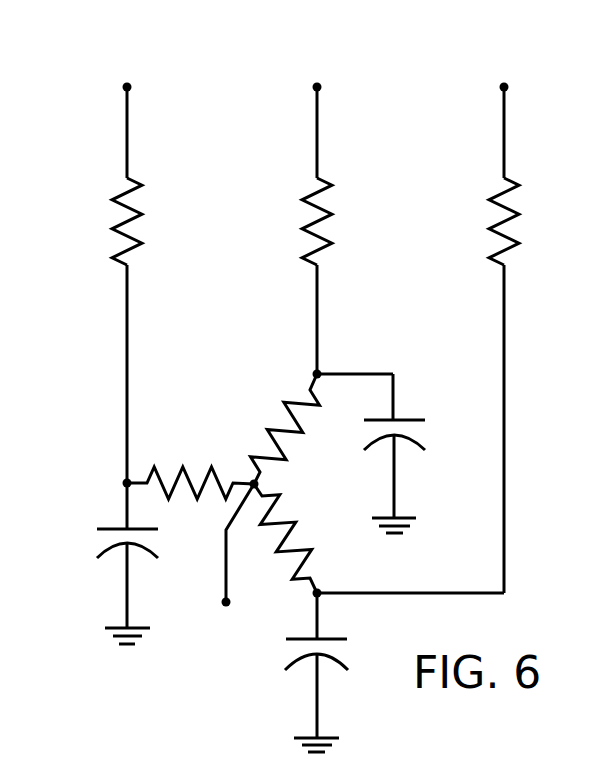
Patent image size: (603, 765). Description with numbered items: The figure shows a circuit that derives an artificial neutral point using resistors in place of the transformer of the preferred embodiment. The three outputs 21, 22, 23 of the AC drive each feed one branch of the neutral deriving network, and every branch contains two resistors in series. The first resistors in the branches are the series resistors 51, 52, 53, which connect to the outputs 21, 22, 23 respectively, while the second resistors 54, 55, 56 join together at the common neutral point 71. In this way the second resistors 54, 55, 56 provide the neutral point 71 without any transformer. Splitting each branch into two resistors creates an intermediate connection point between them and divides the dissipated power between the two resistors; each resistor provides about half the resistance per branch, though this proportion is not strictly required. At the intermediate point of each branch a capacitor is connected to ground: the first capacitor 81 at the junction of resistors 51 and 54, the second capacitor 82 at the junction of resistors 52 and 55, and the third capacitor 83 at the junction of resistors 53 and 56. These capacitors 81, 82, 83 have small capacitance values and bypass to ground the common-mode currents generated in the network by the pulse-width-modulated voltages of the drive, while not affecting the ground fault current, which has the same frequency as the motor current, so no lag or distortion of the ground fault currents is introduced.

The first output of the AC drive 21 is at (126, 111).
The second output of the AC drive 22 is at (315, 111).
The third output of the AC drive 23 is at (503, 111).
The resistor R1 51 is at (106, 181).
The resistor R2 52 is at (295, 181).
The resistor R3 53 is at (482, 181).
The resistor R4 54 is at (167, 450).
The resistor R5 55 is at (276, 387).
The resistor R6 56 is at (303, 499).
The neutral point 71 is at (232, 562).
The capacitor C1 81 is at (85, 530).
The capacitor C2 82 is at (433, 427).
The capacitor C3 83 is at (273, 662).